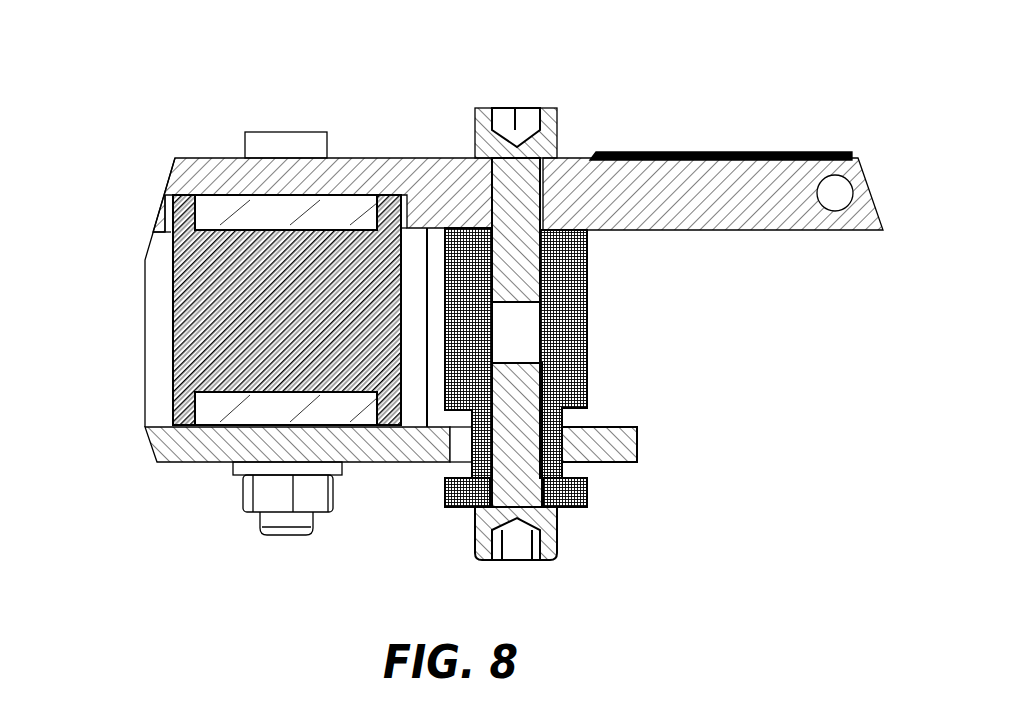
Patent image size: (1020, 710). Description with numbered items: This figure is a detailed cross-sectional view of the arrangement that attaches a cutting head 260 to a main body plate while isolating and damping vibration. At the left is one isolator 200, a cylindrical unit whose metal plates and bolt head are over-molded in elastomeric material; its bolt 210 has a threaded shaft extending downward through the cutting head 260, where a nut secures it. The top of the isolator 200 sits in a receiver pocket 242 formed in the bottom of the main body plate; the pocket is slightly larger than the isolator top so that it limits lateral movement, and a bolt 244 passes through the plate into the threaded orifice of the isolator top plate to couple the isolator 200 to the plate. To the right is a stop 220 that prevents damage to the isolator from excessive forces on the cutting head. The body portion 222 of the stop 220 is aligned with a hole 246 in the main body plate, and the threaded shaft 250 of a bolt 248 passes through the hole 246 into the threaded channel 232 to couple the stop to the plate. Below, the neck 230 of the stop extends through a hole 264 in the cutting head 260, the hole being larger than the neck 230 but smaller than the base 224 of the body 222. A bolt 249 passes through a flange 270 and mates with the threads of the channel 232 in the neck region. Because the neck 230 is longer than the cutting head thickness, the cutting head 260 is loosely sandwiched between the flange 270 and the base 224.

The isolator 200 is at (168, 278).
The bolt 210 is at (270, 535).
The stop 220 is at (600, 323).
The body portion 222 is at (592, 285).
The base 224 is at (590, 410).
The neck 230 is at (560, 463).
The threaded channel 232 is at (518, 330).
The receiver pocket 242 is at (410, 195).
The bolt 244 is at (277, 140).
The hole 246 is at (545, 190).
The bolt 248 is at (555, 107).
The bolt 249 is at (563, 530).
The threaded shaft 250 is at (547, 263).
The cutting head 260 is at (162, 465).
The hole 264 is at (447, 453).
The flange 270 is at (450, 507).